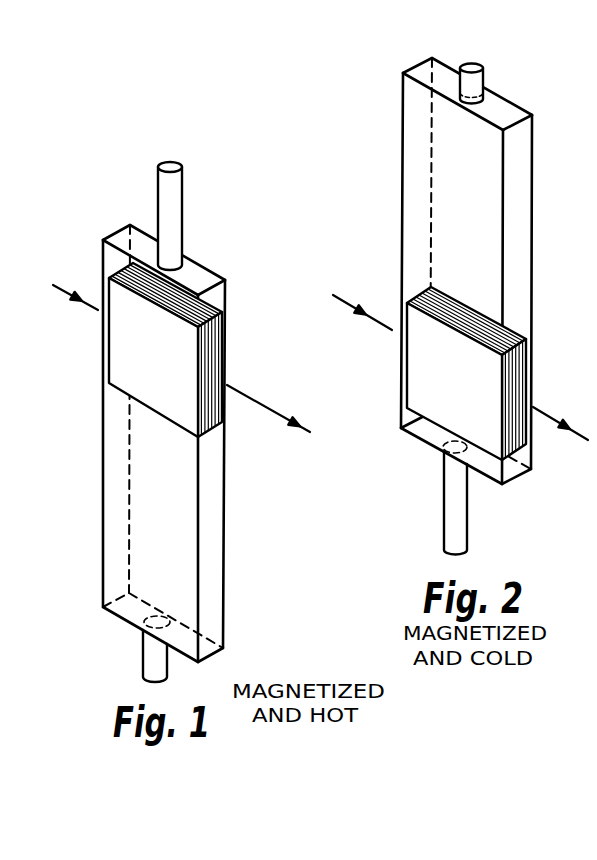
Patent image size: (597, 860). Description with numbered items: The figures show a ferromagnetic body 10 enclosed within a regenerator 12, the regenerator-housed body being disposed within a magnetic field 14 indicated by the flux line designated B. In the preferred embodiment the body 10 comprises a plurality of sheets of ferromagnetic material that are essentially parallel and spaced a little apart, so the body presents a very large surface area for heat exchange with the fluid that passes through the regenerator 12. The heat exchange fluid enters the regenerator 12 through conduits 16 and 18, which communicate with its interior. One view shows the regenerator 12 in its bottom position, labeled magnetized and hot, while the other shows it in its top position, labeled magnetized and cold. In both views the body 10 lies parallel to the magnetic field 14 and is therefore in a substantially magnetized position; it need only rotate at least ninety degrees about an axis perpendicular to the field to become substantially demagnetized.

In FIG. 1, the body 10 is at (157, 360).
In FIG. 2, the body 10 is at (464, 381).
In FIG. 1, the regenerator 12 is at (227, 533).
In FIG. 2, the regenerator 12 is at (531, 228).
In FIG. 1, the magnetic field 14 is at (85, 307).
In FIG. 2, the magnetic field 14 is at (373, 315).
In FIG. 1, the conduit 16 is at (175, 205).
In FIG. 2, the conduit 16 is at (485, 85).
In FIG. 1, the conduit 18 is at (152, 657).
In FIG. 2, the conduit 18 is at (452, 517).